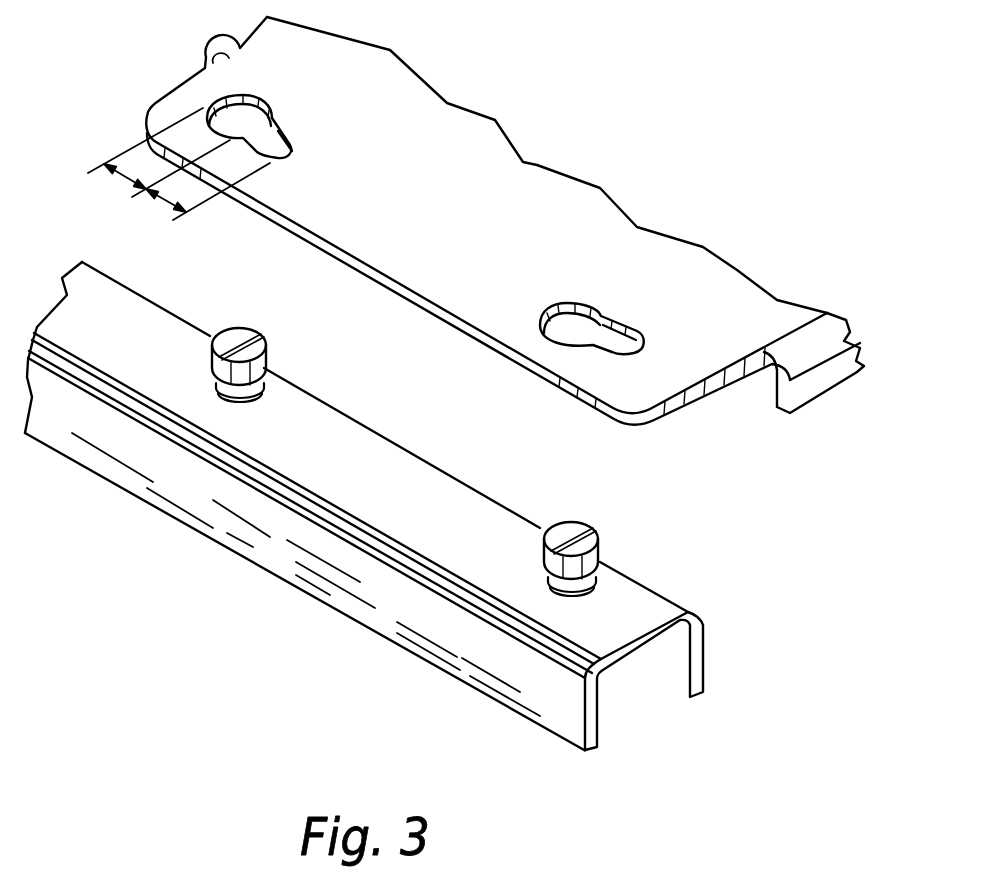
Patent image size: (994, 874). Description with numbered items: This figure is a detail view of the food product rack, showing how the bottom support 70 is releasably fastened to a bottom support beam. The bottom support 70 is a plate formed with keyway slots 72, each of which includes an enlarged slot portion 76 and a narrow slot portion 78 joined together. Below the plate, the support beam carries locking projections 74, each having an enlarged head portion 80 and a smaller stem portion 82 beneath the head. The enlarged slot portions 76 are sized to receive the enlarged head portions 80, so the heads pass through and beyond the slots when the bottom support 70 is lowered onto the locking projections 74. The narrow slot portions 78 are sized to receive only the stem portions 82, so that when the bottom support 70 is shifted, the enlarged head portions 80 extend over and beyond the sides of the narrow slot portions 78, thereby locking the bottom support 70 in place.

The bottom support 70 is at (477, 187).
The keyway slot 72 is at (258, 100).
The locking projection 74 is at (270, 348).
The enlarged slot portion 76 is at (121, 178).
The narrow slot portion 78 is at (166, 206).
The enlarged head portion 80 is at (212, 364).
The stem portion 82 is at (557, 594).